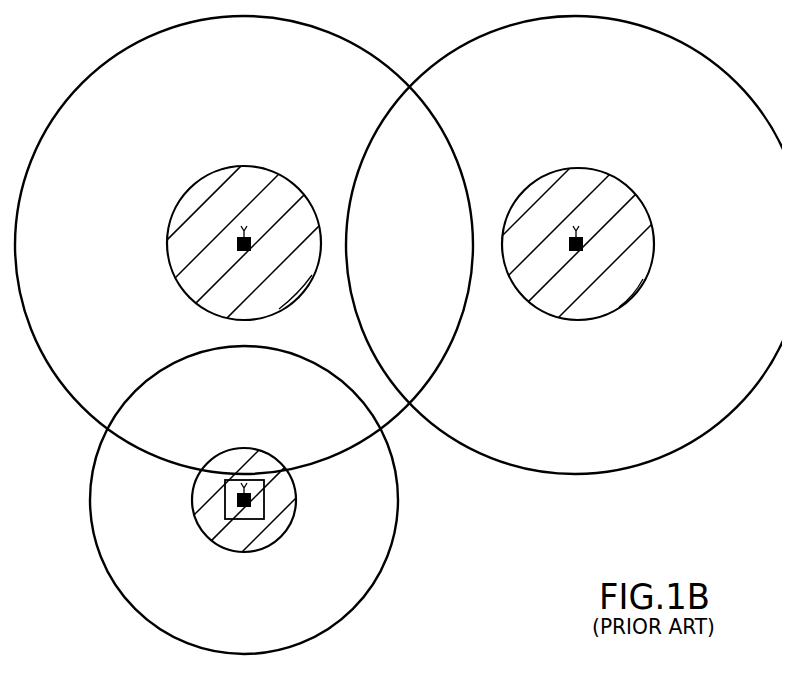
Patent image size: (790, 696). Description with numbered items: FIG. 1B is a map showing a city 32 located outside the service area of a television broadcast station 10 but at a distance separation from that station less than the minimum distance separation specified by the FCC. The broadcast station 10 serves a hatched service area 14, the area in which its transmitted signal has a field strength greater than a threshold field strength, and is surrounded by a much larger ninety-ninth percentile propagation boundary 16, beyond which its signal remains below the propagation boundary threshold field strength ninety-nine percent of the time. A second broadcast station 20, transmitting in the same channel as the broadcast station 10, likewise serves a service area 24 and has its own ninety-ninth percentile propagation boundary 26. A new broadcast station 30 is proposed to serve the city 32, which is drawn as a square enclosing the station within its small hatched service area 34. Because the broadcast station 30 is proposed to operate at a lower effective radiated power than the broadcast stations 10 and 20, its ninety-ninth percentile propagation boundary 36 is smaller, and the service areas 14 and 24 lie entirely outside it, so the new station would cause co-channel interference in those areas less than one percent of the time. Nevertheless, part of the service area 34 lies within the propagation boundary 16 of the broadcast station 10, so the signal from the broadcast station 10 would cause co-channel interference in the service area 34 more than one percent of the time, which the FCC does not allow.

The broadcast station 10 is at (249, 232).
The service area 14 is at (188, 185).
The 99th percentile propagation boundary 16 is at (117, 48).
The broadcast station 20 is at (584, 232).
The service area 24 is at (522, 185).
The 99th percentile propagation boundary 26 is at (450, 50).
The broadcast station 30 is at (250, 492).
The city 32 is at (223, 517).
The service area 34 is at (217, 453).
The 99th percentile propagation boundary 36 is at (88, 509).